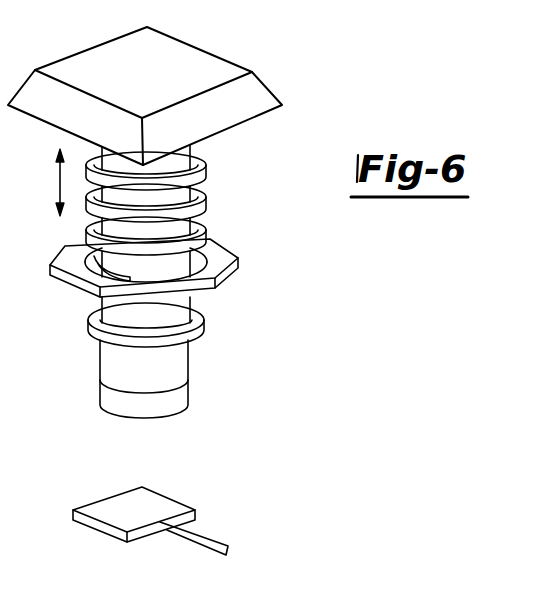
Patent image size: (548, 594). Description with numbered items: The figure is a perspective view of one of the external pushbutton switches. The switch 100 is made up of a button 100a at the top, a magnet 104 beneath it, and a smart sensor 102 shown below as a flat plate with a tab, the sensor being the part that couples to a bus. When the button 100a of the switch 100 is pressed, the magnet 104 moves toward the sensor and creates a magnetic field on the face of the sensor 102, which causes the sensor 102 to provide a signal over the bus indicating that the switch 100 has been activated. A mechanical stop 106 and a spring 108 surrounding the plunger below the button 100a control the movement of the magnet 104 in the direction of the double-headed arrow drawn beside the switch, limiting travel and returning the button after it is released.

The switch 100 is at (217, 157).
The button 100a is at (220, 56).
The smart sensor 102 is at (160, 493).
The magnet 104 is at (188, 396).
The mechanical stop 106 is at (196, 318).
The spring 108 is at (210, 222).